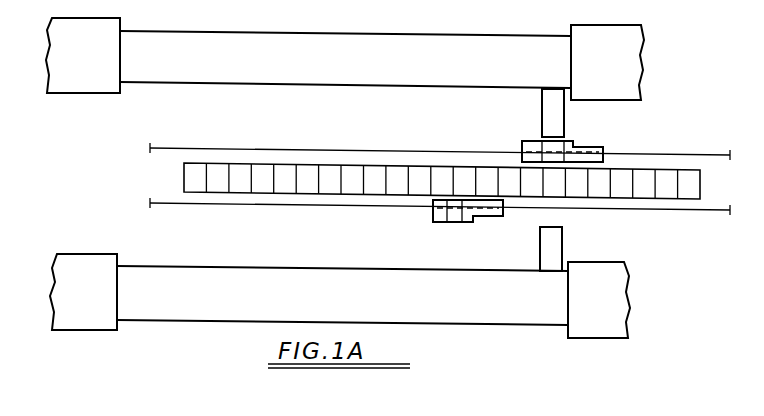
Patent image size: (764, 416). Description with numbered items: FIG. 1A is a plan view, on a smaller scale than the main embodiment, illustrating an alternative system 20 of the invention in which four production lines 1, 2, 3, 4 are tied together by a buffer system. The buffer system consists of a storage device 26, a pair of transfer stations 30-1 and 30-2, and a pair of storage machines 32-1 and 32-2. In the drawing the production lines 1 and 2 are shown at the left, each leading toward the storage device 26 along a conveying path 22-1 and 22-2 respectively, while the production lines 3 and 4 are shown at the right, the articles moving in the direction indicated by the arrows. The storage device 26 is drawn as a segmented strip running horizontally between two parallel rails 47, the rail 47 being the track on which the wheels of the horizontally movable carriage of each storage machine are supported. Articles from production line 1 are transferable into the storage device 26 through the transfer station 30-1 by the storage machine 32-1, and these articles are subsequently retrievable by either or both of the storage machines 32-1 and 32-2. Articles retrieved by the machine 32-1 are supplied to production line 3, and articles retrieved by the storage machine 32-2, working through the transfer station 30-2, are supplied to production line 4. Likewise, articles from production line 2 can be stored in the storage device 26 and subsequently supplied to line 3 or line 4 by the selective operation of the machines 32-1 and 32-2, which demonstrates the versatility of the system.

The production line 1 is at (92, 302).
The production line 2 is at (94, 67).
The production line 3 is at (607, 310).
The production line 4 is at (616, 75).
The tape transport system 20 is at (549, 4).
The first conveyor belt 22-1 is at (342, 293).
The second conveyor belt 22-2 is at (368, 56).
The storage device 26 is at (176, 178).
The transfer station 30-1 is at (539, 252).
The transfer station 30-2 is at (534, 114).
The storage machine 32-1 is at (422, 214).
The storage machine 32-2 is at (596, 136).
The rail 47 is at (249, 147).